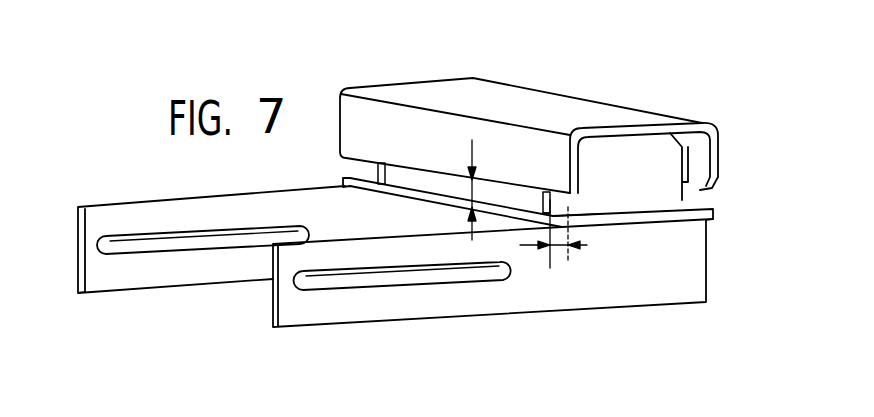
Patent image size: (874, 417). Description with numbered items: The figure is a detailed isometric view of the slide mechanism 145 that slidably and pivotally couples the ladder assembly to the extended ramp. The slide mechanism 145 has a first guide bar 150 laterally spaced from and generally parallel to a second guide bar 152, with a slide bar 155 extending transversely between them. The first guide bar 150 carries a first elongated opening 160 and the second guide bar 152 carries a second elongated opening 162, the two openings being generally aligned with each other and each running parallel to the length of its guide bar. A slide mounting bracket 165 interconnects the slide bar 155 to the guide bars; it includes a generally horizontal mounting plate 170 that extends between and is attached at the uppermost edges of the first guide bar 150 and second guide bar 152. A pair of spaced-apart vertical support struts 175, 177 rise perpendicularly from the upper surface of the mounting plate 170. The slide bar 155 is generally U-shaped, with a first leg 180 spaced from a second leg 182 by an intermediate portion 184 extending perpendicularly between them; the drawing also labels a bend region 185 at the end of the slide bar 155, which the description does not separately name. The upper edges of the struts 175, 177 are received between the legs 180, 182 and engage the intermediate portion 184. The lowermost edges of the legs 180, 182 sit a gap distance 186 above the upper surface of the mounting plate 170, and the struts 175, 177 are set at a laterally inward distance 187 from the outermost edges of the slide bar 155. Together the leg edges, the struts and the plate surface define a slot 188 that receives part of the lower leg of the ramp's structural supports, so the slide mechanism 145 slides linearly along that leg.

The slide mechanism 145 is at (376, 299).
The first guide bar 150 is at (211, 284).
The second guide bar 152 is at (503, 300).
The slide bar 155 is at (581, 112).
The first elongated opening 160 is at (237, 250).
The second elongated opening 162 is at (448, 290).
The slide mounting bracket 165 is at (730, 216).
The mounting plate 170 is at (423, 198).
The first vertical support strut 175 is at (377, 168).
The second vertical support strut 177 is at (598, 198).
The first leg 180 is at (418, 133).
The second leg 182 is at (698, 180).
The intermediate portion 184 is at (475, 98).
The channel bend 185 is at (635, 130).
The gap distance 186 is at (473, 187).
The laterally inward distance 187 is at (566, 262).
The slot 188 is at (545, 203).